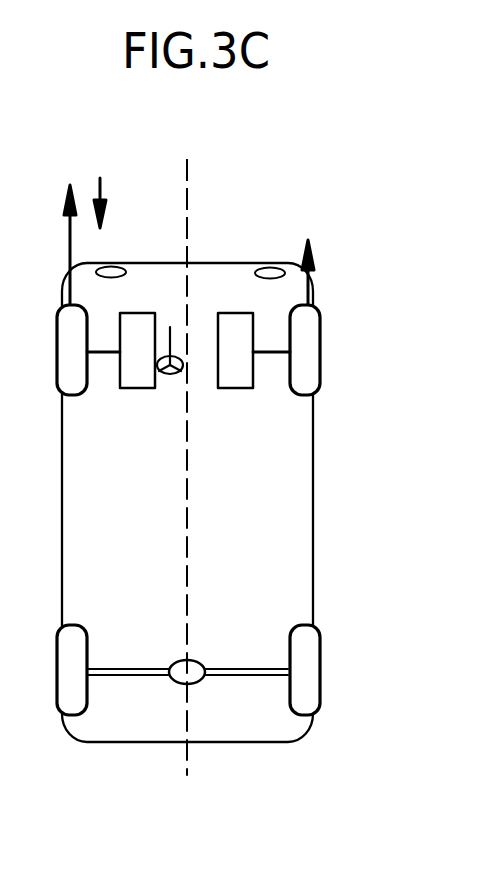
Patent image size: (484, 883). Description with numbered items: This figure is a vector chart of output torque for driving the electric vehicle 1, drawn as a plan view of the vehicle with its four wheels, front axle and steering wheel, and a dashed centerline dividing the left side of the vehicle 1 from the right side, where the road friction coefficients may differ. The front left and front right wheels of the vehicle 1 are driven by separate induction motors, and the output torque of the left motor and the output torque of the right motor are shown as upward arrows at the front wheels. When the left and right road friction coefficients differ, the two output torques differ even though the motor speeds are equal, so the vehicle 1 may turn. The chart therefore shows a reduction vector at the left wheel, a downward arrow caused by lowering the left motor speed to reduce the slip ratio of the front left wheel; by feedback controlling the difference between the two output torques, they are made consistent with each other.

The electric vehicle 1 is at (313, 507).